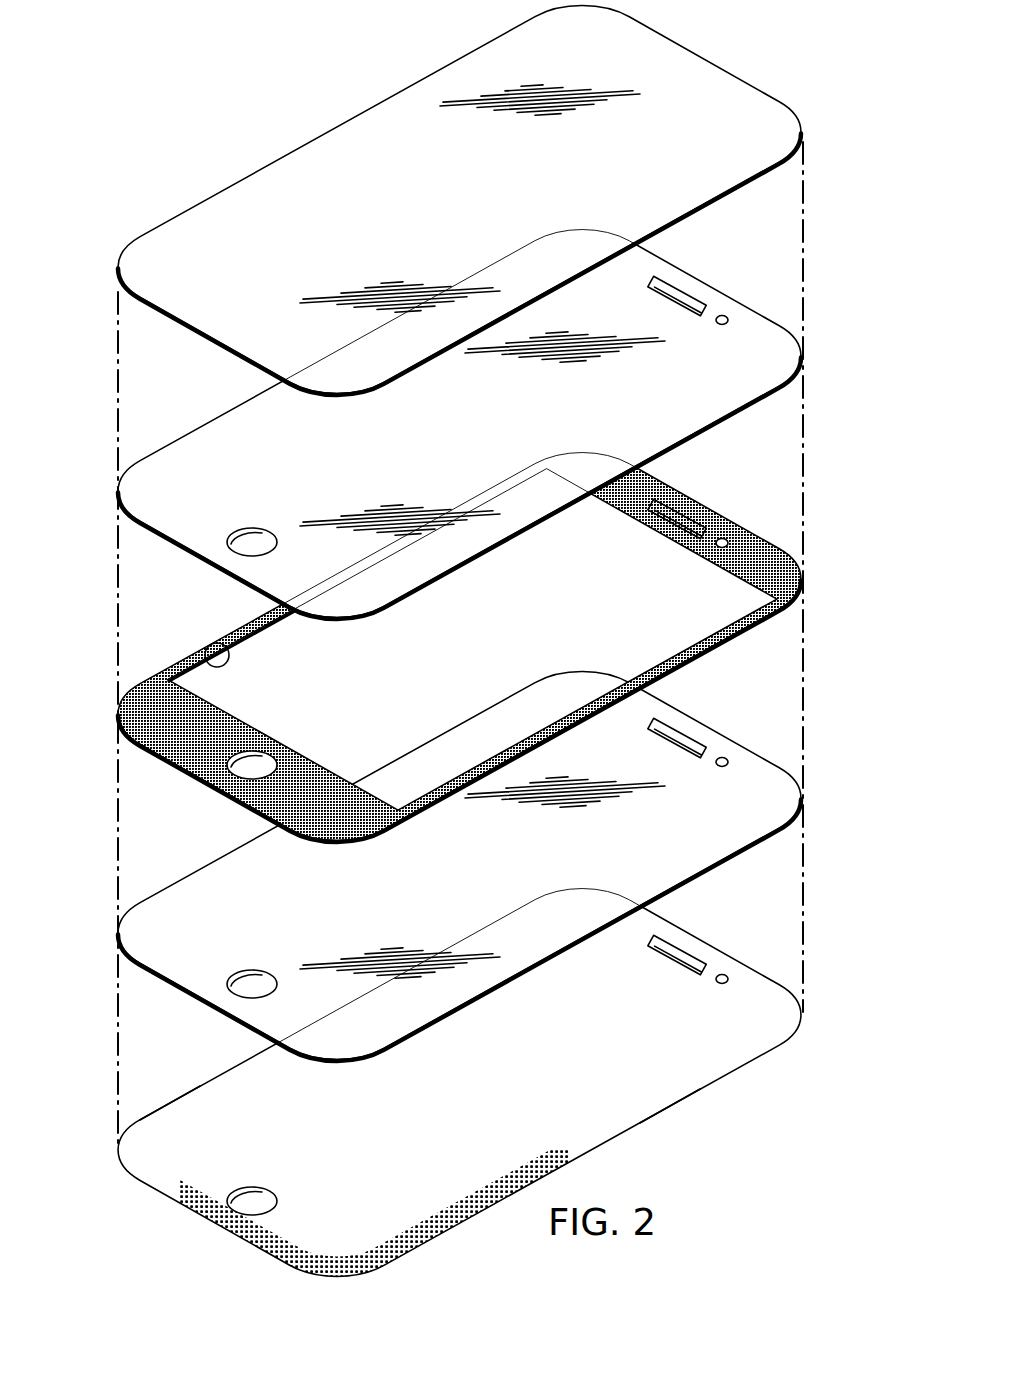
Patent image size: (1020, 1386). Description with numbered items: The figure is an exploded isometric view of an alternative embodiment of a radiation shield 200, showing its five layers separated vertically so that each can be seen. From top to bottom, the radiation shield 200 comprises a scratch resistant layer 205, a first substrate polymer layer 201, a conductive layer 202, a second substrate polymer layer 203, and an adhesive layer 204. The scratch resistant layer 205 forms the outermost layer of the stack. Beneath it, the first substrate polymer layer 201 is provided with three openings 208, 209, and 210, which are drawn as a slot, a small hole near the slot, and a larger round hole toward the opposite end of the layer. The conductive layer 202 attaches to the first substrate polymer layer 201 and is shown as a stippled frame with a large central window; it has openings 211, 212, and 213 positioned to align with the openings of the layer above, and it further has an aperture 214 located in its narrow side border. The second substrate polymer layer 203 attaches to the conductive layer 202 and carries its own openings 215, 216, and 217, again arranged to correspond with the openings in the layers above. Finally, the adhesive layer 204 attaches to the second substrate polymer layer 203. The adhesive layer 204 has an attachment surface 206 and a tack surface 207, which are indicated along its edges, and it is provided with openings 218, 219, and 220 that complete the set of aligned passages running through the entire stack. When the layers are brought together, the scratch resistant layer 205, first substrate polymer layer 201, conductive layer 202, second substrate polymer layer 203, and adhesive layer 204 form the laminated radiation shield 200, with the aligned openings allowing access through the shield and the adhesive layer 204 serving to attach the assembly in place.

The radiation shield 200 is at (315, 74).
The first substrate polymer layer 201 is at (199, 562).
The conductive layer 202 is at (218, 792).
The second substrate polymer layer 203 is at (218, 1011).
The adhesive layer 204 is at (218, 1228).
The scratch resistant layer 205 is at (218, 348).
The attachment surface 206 is at (163, 1122).
The tack surface 207 is at (672, 1100).
The opening 208 is at (673, 286).
The opening 209 is at (722, 315).
The opening 210 is at (253, 527).
The opening 211 is at (673, 508).
The opening 212 is at (722, 538).
The opening 213 is at (266, 751).
The aperture 214 is at (215, 643).
The opening 215 is at (673, 728).
The opening 216 is at (722, 757).
The opening 217 is at (253, 969).
The opening 218 is at (673, 945).
The opening 219 is at (722, 974).
The opening 220 is at (253, 1186).